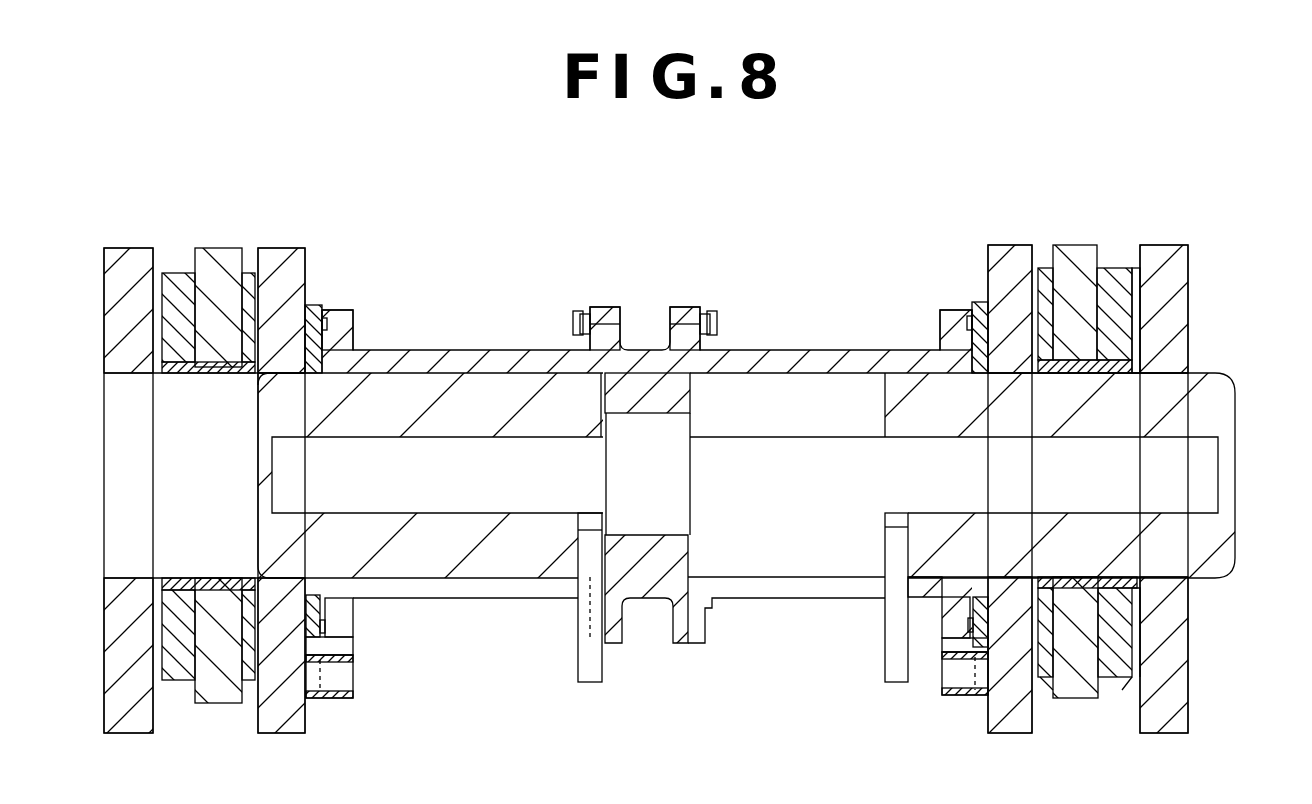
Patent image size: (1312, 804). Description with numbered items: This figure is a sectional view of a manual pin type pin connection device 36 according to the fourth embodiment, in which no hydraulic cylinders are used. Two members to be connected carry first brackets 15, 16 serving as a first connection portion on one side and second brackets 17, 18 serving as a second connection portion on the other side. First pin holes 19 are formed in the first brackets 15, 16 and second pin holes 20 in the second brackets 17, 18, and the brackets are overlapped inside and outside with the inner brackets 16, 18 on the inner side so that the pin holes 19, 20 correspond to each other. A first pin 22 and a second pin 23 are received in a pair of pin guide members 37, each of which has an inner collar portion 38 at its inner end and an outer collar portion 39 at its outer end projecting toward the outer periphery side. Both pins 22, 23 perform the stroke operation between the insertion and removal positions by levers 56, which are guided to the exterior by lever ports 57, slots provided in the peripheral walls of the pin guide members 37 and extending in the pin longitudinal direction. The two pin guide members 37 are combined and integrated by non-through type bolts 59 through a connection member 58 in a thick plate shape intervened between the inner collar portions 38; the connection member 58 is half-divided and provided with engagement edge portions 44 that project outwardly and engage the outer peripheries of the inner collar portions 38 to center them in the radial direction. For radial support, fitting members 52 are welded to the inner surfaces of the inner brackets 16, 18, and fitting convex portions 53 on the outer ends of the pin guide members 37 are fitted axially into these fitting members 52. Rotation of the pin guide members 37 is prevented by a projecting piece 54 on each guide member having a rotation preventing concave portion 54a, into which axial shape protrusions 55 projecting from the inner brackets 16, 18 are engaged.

The first bracket 15 is at (219, 247).
The first bracket 16 is at (285, 247).
The second bracket 17 is at (1072, 244).
The second bracket 18 is at (1010, 244).
The first pin hole 19 is at (207, 377).
The second pin hole 20 is at (1070, 373).
The first pin 22 is at (484, 385).
The second pin 23 is at (1198, 545).
The pin connection device 36 is at (811, 277).
The pin guide member 37 is at (428, 349).
The inner collar portion 38 is at (592, 306).
The outer collar portion 39 is at (338, 309).
The engagement edge portion 44 is at (604, 306).
The fitting member 52 is at (313, 304).
The fitting convex portion 53 is at (293, 380).
The projecting piece 54 is at (320, 665).
The rotation preventing concave portion 54a is at (355, 650).
The protrusion 55 is at (340, 700).
The lever 56 is at (576, 660).
The lever port 57 is at (490, 592).
The connection member 58 is at (692, 395).
The bolt 59 is at (573, 322).